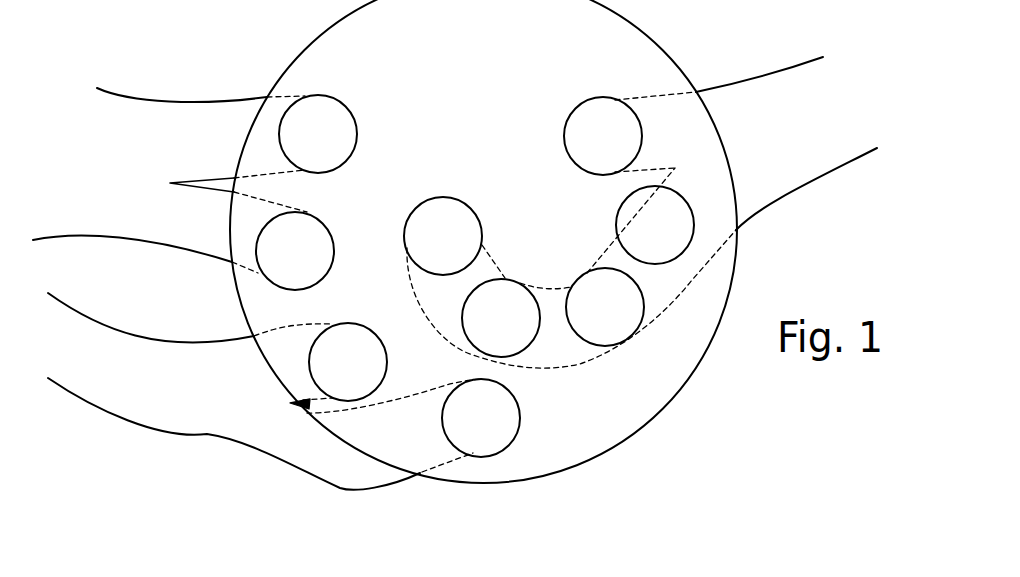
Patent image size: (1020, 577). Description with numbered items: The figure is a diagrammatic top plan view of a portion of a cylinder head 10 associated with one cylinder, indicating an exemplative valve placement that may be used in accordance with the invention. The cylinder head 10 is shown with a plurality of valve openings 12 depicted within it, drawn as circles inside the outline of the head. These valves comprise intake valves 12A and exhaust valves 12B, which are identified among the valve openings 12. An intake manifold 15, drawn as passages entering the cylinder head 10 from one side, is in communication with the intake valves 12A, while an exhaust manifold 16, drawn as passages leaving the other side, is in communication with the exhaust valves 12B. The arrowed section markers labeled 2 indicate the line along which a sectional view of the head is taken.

The cylinder head 10 is at (603, 455).
The valve openings 12 is at (322, 224).
The intake valves 12A is at (383, 347).
The exhaust valves 12B is at (515, 281).
The intake manifold 15 is at (202, 102).
The exhaust manifold 16 is at (748, 80).
The section line 2- 2 is at (147, 118).